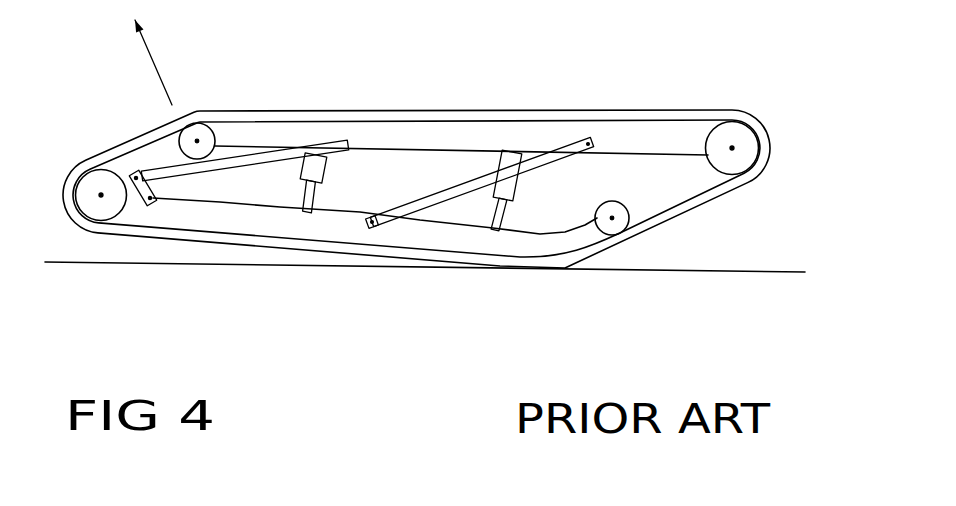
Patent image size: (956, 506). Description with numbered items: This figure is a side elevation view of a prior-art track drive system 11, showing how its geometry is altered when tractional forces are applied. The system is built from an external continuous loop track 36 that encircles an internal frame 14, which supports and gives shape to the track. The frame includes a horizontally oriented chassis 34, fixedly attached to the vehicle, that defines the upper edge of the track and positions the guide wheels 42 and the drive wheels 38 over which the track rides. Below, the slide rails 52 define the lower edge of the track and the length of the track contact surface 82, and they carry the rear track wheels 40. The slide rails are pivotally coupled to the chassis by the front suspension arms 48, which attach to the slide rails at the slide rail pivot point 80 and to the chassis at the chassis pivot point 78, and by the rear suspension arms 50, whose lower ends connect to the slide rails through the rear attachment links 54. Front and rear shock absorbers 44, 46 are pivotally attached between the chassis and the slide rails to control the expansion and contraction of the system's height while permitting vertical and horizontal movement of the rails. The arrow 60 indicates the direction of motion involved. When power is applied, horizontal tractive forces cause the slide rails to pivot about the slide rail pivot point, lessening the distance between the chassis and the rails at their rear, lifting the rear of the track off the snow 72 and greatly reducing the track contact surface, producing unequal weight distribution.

The track drive system 11 is at (142, 127).
The internal frame 14 is at (697, 120).
The chassis 34 is at (386, 135).
The track 36 is at (314, 110).
The drive wheels 38 is at (738, 138).
The rear track wheels 40 is at (95, 182).
The guide wheels 42 is at (201, 130).
The front shock absorber 44 is at (493, 232).
The rear shock absorber 46 is at (303, 215).
The front suspension arms 48 is at (468, 178).
The rear suspension arms 50 is at (217, 170).
The slide rails 52 is at (418, 238).
The rear attachment links 54 is at (152, 208).
The direction of travel arrow 60 is at (152, 45).
The snow 72 is at (760, 268).
The chassis pivot point 78 is at (587, 135).
The slide rail pivot point 80 is at (372, 232).
The track contact surface 82 is at (587, 265).